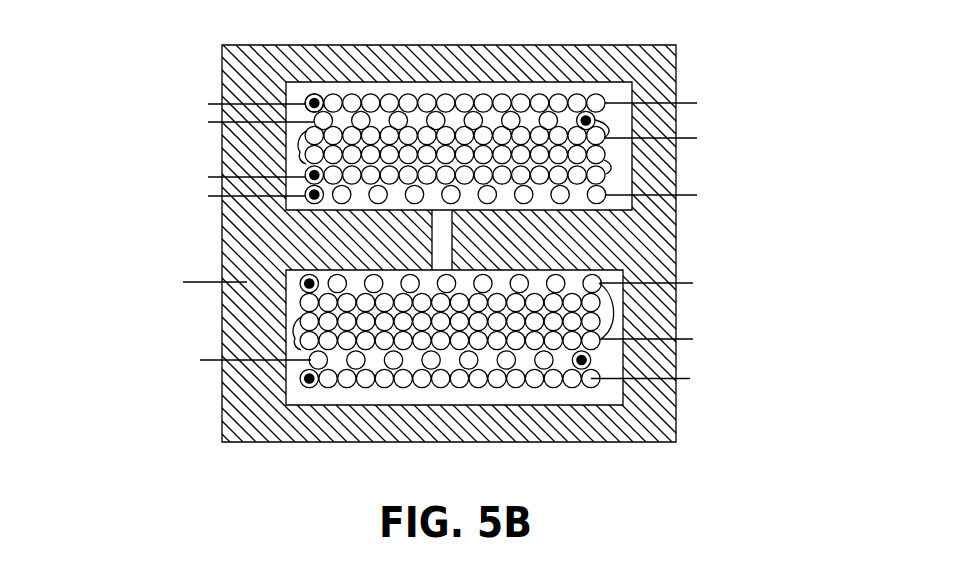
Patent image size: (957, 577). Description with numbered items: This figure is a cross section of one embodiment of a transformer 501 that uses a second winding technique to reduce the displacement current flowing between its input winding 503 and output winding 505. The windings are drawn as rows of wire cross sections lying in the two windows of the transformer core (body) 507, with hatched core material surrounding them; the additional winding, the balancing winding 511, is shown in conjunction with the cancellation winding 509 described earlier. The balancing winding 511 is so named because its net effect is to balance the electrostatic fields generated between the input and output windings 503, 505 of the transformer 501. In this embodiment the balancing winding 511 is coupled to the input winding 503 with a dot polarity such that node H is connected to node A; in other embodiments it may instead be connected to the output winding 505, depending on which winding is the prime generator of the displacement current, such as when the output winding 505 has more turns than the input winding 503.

The transformer 501 is at (674, 20).
The input winding 503 is at (123, 180).
The output winding 505 is at (770, 87).
The transformer core (body) 507 is at (98, 314).
The cancellation winding 509 is at (123, 207).
The balancing winding 511 is at (123, 123).